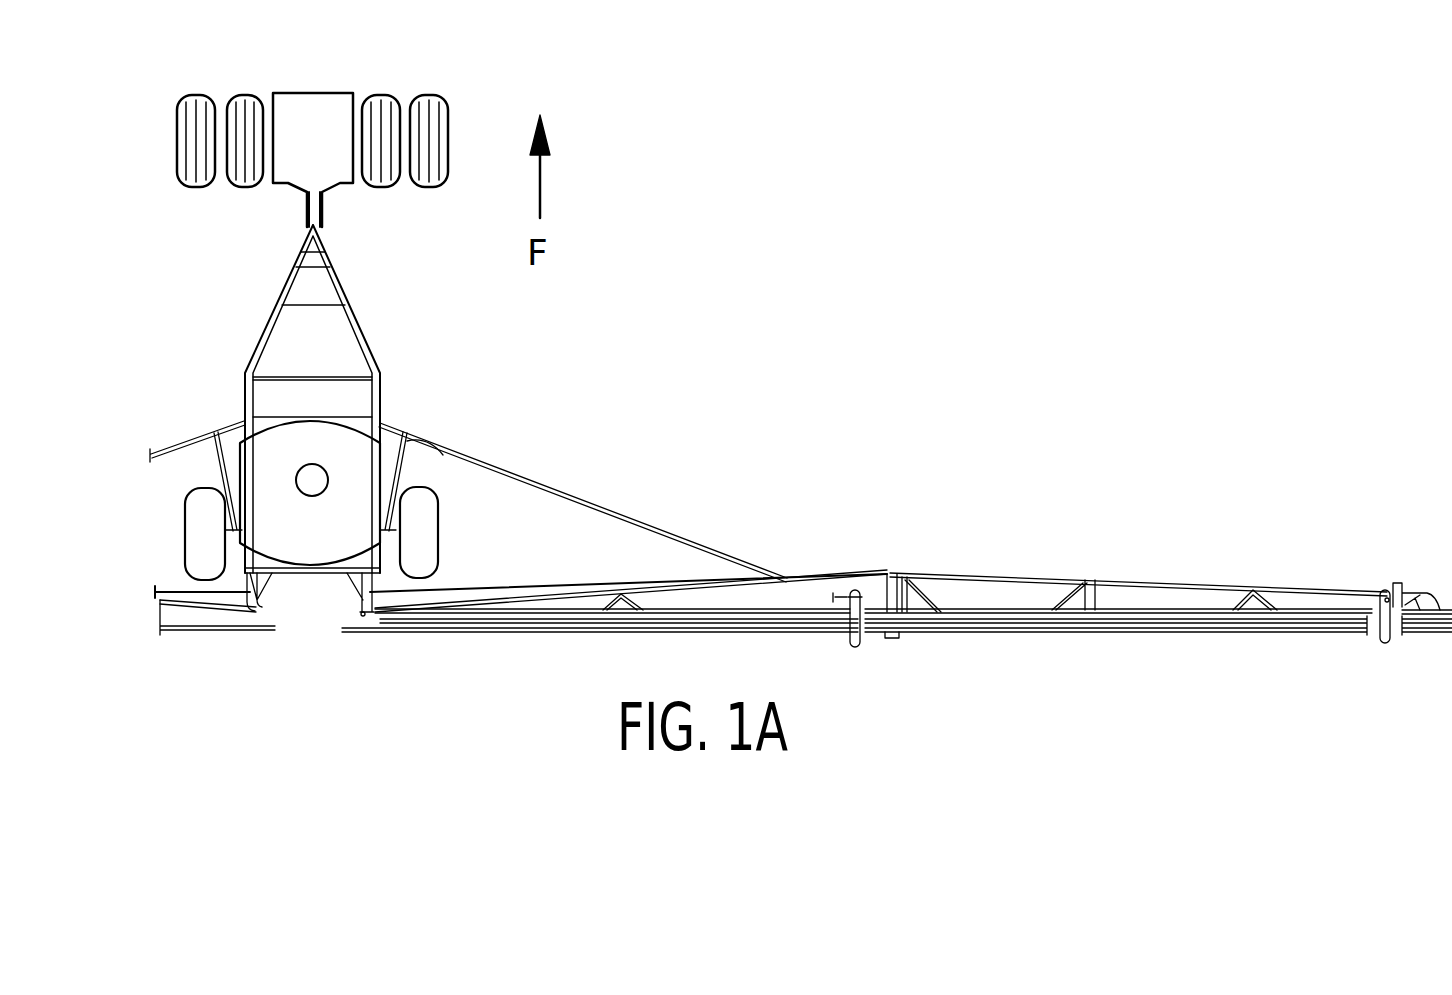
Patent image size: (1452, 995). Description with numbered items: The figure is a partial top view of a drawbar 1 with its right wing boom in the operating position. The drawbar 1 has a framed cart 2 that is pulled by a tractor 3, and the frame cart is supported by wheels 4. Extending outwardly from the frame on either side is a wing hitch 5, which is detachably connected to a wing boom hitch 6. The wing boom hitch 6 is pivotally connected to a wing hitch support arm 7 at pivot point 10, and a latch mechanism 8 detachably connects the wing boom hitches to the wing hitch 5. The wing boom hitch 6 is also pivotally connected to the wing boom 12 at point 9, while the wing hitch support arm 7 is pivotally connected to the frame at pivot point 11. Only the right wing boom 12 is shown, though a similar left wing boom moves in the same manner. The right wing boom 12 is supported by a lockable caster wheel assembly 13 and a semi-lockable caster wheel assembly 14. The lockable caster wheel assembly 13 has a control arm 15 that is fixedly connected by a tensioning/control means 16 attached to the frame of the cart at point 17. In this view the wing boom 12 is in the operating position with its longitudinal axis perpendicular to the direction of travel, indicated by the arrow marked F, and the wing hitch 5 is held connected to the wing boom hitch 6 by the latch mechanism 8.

The drawbar 1 is at (700, 448).
The framed cart 2 is at (357, 320).
The tractor 3 is at (327, 192).
The wheels 4 is at (432, 542).
The wing hitch 5 is at (391, 424).
The wing boom hitch 6 is at (600, 505).
The wing hitch support arm 7 is at (407, 472).
The latch mechanism 8 is at (434, 427).
The pivot point 9 is at (787, 577).
The pivot point 10 is at (443, 449).
The pivot point 11 is at (378, 612).
The wing boom 12 is at (917, 617).
The lockable caster wheel assembly 13 is at (852, 640).
The semi-lockable caster wheel assembly 14 is at (1383, 640).
The control arm 15 is at (860, 592).
The tensioning/control means 16 is at (767, 598).
The attachment point 17 is at (333, 590).